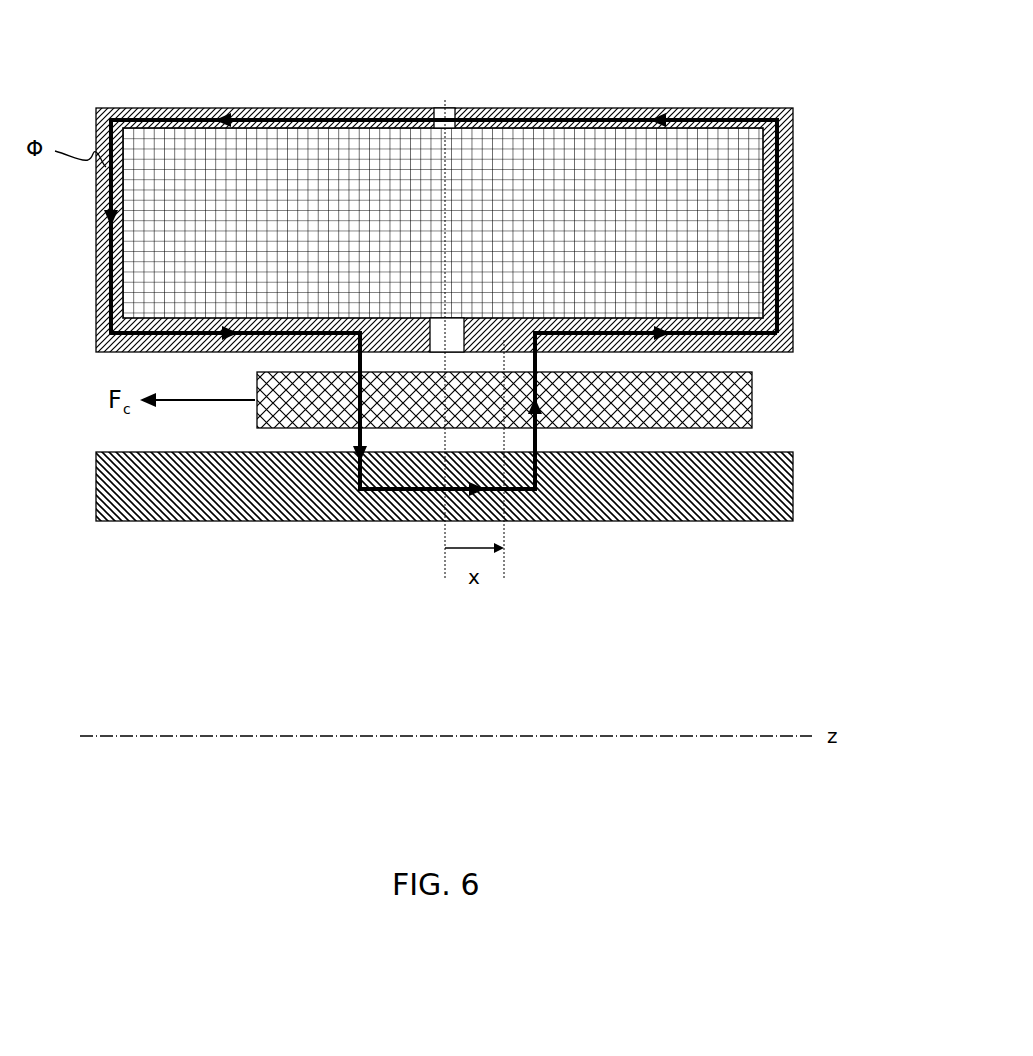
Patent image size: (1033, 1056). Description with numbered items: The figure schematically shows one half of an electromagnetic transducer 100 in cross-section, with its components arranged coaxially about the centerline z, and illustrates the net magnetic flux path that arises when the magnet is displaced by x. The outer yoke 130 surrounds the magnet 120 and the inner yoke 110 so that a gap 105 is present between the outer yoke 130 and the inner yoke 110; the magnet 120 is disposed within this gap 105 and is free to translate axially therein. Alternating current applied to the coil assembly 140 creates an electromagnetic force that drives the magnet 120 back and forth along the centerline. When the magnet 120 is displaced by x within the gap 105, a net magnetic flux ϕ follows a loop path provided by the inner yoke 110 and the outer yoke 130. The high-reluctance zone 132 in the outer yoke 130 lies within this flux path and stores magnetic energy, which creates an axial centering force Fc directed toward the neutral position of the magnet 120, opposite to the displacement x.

The electromagnetic transducer 100 is at (417, 249).
The gap 105 is at (104, 367).
The inner yoke 110 is at (95, 486).
The magnet 120 is at (752, 398).
The outer yoke 130 is at (641, 108).
The high-reluctance zone 132 is at (435, 108).
The coil assembly 140 is at (701, 140).